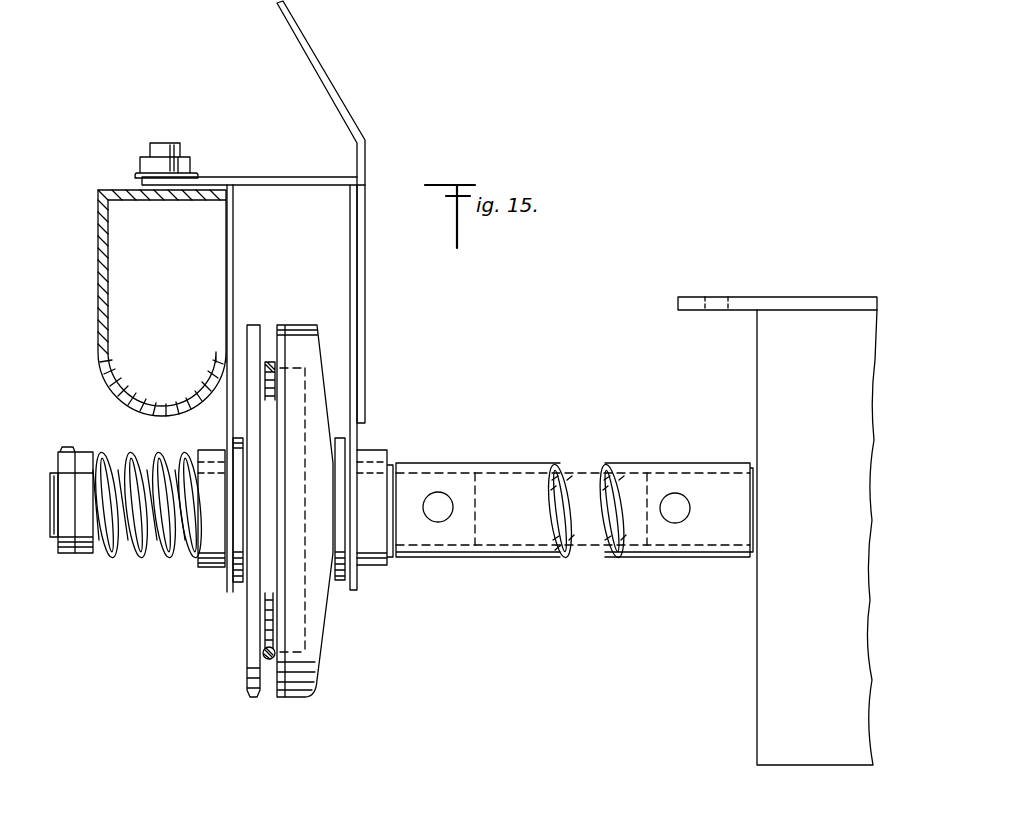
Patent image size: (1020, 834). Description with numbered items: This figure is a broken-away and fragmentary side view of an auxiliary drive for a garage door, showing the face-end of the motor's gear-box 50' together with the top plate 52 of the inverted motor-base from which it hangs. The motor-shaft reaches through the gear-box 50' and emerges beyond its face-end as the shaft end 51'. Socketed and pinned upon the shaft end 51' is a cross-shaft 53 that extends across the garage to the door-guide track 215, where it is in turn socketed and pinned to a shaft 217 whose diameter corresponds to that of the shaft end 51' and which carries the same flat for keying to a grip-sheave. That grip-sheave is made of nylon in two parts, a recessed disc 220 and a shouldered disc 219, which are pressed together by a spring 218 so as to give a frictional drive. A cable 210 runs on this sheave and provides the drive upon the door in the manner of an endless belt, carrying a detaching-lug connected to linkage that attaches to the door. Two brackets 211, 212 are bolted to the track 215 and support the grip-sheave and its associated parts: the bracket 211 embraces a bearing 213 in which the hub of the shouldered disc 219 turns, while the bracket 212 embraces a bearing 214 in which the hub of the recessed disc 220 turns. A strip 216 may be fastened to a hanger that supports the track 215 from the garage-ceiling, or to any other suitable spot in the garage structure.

The door-guide track 215 is at (98, 274).
The bracket 211 is at (228, 265).
The bracket 212 is at (285, 176).
The strip 216 is at (313, 70).
The cable 210 is at (265, 360).
The shouldered disc 219 is at (247, 620).
The recessed disc 220 is at (310, 682).
The bearing 213 is at (210, 448).
The bearing 214 is at (378, 452).
The spring 218 is at (115, 550).
The shaft 217 is at (50, 532).
The shaft end 51' is at (679, 531).
The cross-shaft 53 is at (612, 466).
The top plate 52 is at (712, 305).
The gear-box 50' is at (791, 537).